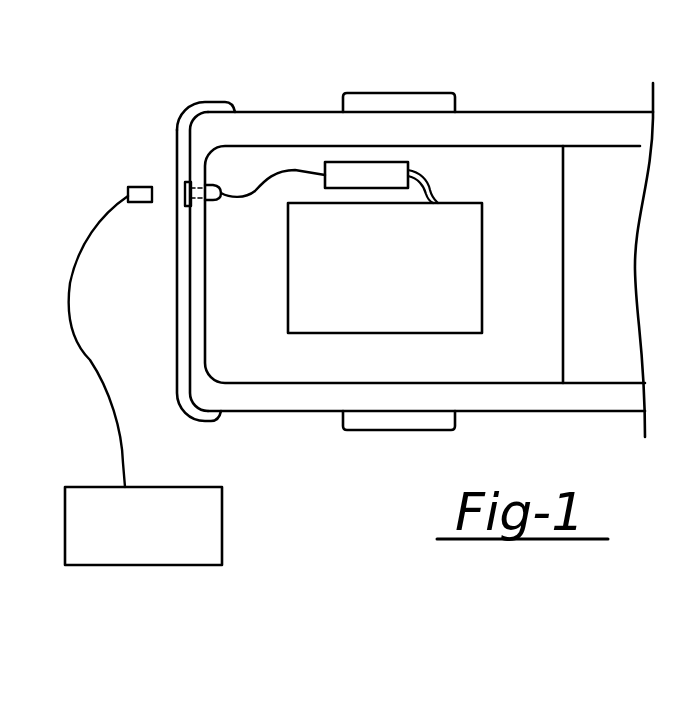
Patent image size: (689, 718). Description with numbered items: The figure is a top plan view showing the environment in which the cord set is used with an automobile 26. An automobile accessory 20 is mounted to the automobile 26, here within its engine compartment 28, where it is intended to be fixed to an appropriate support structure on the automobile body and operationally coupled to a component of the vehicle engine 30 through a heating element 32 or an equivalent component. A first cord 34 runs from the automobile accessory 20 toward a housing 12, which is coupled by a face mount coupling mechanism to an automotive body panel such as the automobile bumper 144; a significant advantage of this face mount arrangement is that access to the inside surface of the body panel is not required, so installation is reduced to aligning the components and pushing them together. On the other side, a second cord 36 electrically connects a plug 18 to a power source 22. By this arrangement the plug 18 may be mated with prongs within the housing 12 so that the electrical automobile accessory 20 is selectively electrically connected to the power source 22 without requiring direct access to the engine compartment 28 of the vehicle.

The housing 12 is at (212, 185).
The plug 18 is at (128, 187).
The automobile accessory 20 is at (400, 168).
The power source 22 is at (213, 487).
The automobile 26 is at (527, 52).
The engine compartment 28 is at (540, 355).
The vehicle engine 30 is at (360, 305).
The heating element 32 is at (447, 190).
The first cord 34 is at (253, 195).
The second cord 36 is at (73, 318).
The automobile bumper 144 is at (180, 110).